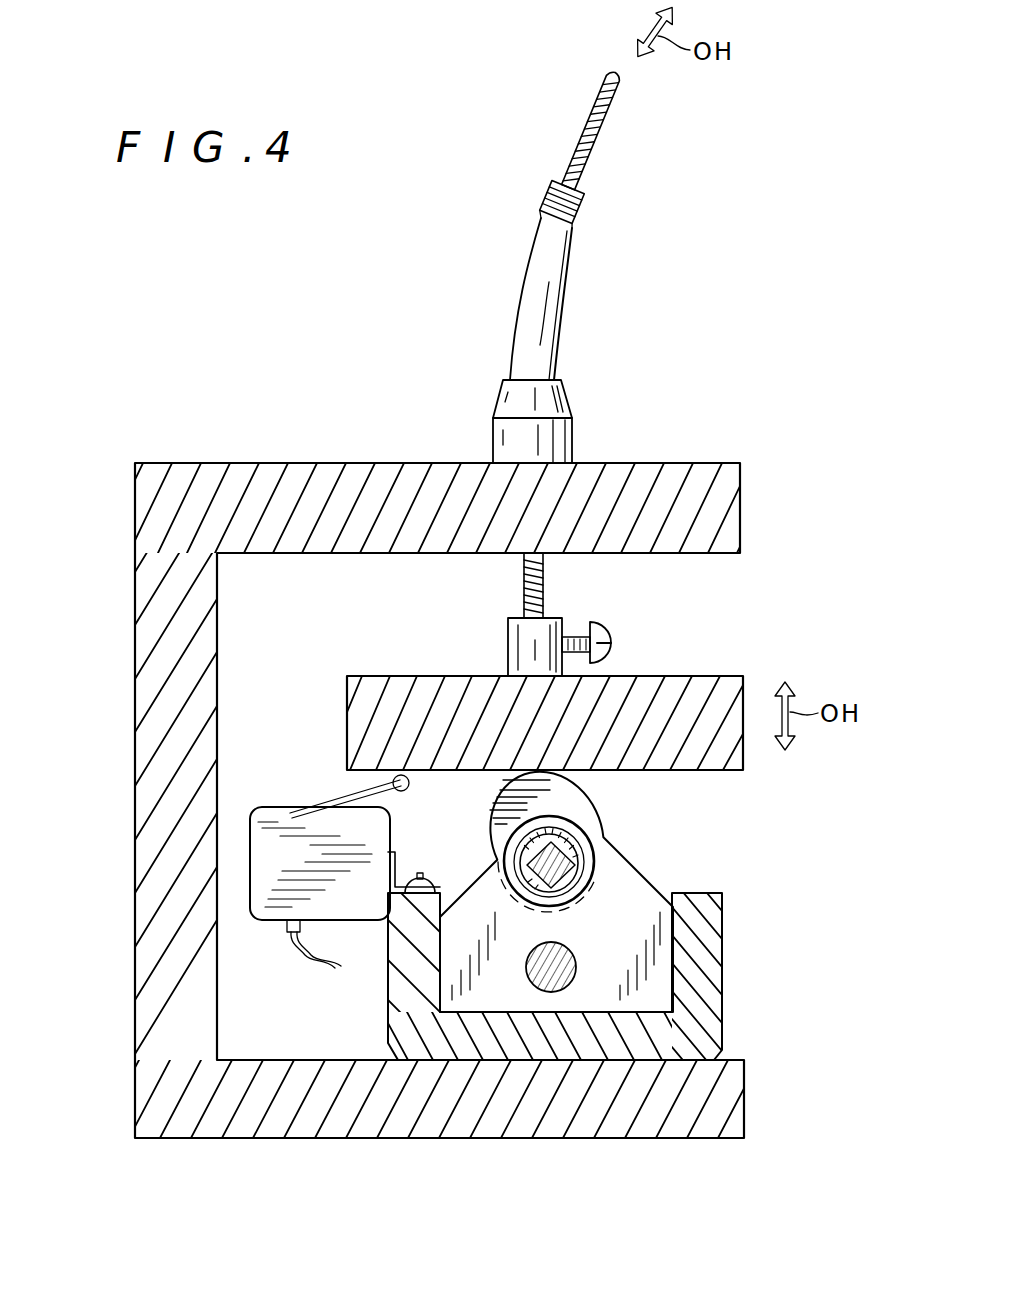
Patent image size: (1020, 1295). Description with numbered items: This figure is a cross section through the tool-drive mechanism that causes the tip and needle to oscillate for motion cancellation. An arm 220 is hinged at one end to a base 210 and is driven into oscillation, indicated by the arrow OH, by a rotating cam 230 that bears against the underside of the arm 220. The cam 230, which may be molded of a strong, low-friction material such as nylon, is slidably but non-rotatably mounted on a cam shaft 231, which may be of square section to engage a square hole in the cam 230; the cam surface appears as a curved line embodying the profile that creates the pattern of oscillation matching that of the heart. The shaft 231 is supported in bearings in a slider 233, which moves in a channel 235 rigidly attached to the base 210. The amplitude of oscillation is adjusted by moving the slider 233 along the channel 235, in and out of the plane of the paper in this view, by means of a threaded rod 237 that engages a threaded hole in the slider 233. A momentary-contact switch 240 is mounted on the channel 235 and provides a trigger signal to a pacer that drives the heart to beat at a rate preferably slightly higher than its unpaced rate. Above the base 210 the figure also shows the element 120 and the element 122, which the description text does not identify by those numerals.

The base 210 is at (135, 463).
The hose 120 is at (524, 288).
The threaded rod 122 is at (580, 128).
The arm 220 is at (651, 675).
The cam 230 is at (600, 832).
The cam shaft 231 is at (578, 866).
The slider 233 is at (658, 962).
The channel 235 is at (722, 1020).
The threaded rod 237 is at (577, 962).
The momentary-contact switch 240 is at (262, 918).